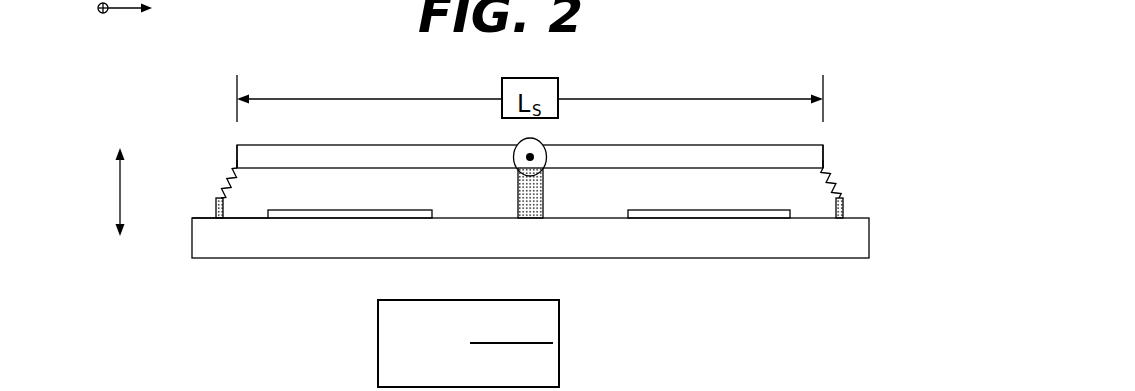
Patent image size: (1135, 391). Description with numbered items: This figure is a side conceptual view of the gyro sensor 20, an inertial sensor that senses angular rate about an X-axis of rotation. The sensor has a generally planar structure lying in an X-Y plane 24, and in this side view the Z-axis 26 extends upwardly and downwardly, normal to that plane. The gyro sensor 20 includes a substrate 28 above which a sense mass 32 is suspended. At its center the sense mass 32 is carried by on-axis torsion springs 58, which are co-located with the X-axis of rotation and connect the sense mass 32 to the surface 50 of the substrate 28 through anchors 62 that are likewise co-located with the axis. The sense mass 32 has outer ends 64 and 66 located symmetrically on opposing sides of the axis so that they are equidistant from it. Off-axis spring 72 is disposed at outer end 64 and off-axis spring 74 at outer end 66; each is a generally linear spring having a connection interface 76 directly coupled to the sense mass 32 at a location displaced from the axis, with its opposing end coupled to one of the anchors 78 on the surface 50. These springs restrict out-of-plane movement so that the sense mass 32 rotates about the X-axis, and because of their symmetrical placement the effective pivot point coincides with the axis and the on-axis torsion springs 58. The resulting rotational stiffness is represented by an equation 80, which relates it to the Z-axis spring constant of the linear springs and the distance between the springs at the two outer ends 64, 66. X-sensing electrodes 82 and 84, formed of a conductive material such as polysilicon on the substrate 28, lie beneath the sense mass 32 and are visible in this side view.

The gyro sensor 20 is at (822, 352).
The X-Y plane 24 is at (127, 8).
The Z-axis 26 is at (97, 12).
The substrate 28 is at (192, 256).
The sense mass 32 is at (610, 144).
The surface 50 is at (250, 218).
The on-axis torsion springs 58 is at (534, 157).
The anchors 62 is at (543, 202).
The outer end 64 is at (825, 148).
The outer end 66 is at (236, 146).
The off-axis spring 72 is at (840, 179).
The off-axis spring 74 is at (226, 180).
The connection interface 76 is at (235, 170).
The anchors 78 is at (217, 203).
The equation 80 is at (555, 313).
The X-sensing electrode 82 is at (733, 210).
The X-sensing electrode 84 is at (353, 210).